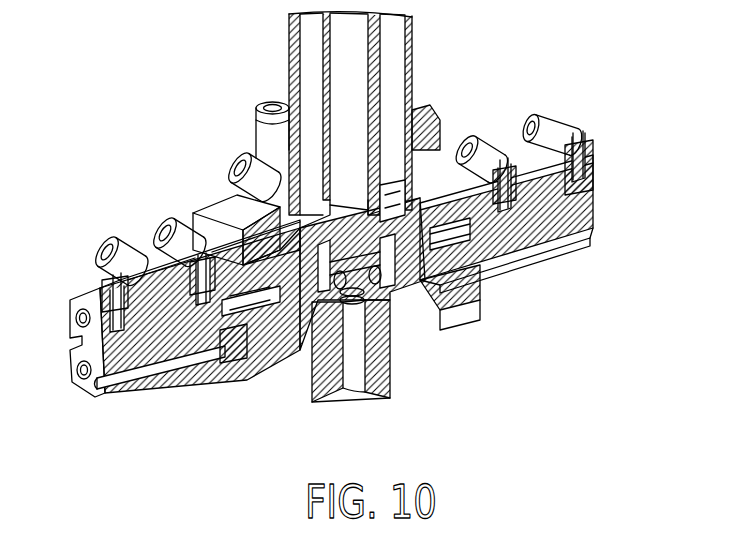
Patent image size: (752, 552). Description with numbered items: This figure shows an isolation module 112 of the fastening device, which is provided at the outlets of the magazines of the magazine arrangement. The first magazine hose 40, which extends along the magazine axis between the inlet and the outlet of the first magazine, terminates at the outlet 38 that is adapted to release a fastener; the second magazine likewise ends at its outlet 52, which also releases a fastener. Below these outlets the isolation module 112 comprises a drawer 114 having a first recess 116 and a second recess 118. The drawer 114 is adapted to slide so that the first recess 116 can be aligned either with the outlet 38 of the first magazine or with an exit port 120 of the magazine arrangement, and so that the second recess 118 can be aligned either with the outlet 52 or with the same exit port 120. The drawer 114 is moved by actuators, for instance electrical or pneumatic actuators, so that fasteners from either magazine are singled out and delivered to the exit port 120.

The isolation module 112 is at (622, 110).
The first magazine hose 40 is at (312, 88).
The outlet 38 is at (272, 202).
The outlet 52 is at (405, 205).
The drawer 114 is at (440, 268).
The first recess 116 is at (300, 322).
The second recess 118 is at (398, 288).
The exit port 120 is at (375, 393).